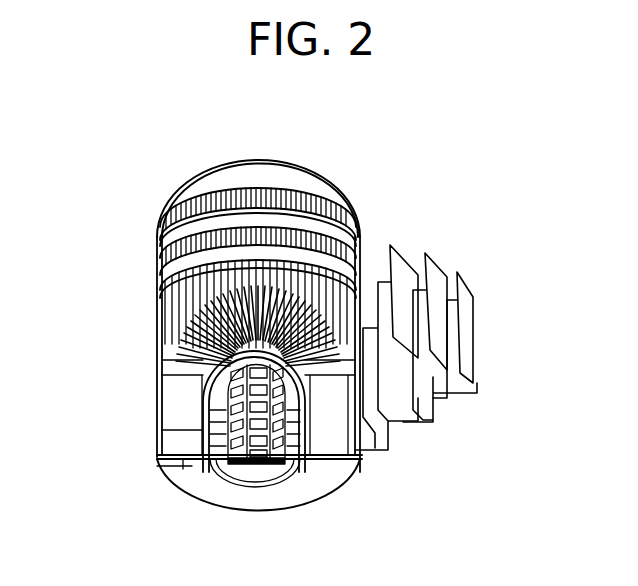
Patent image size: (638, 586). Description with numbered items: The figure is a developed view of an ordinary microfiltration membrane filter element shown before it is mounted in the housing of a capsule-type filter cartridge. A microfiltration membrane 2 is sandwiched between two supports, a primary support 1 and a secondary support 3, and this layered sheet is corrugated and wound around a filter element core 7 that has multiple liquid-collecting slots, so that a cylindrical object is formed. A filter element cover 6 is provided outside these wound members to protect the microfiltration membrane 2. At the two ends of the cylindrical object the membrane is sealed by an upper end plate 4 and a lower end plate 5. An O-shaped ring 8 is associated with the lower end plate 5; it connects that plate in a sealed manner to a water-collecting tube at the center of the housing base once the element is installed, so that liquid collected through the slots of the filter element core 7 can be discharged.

The primary support 1 is at (450, 382).
The microfiltration membrane 2 is at (447, 345).
The secondary support 3 is at (402, 309).
The upper end plate 4 is at (208, 170).
The lower end plate 5 is at (185, 482).
The filter element cover 6 is at (160, 262).
The filter element core 7 is at (162, 429).
The O-shaped ring 8 is at (255, 472).